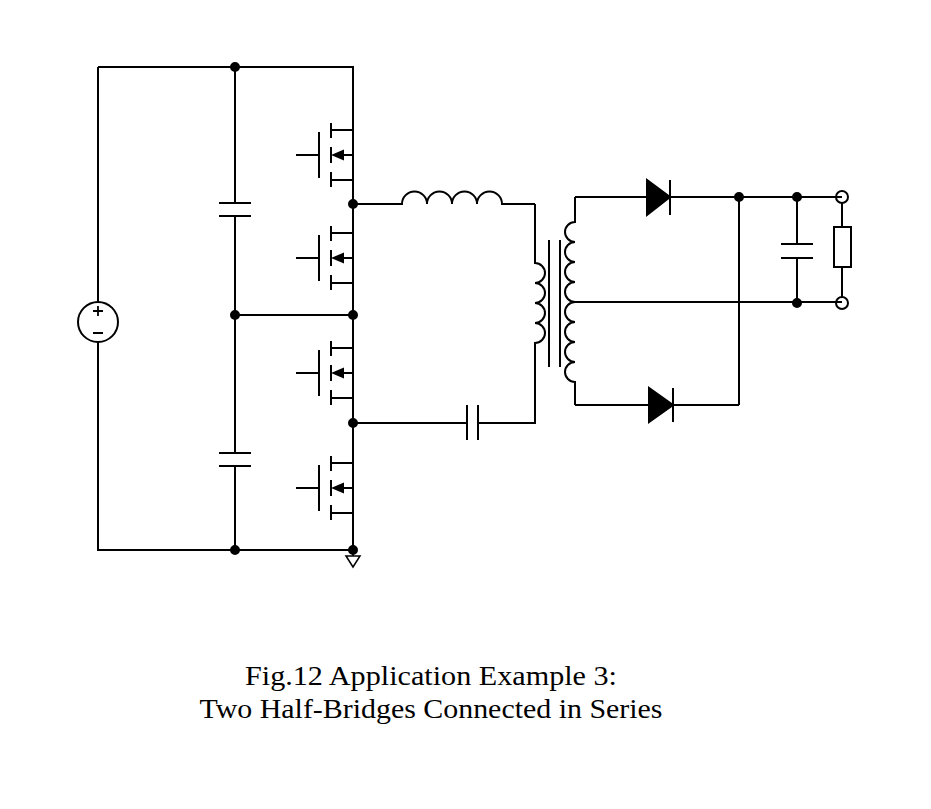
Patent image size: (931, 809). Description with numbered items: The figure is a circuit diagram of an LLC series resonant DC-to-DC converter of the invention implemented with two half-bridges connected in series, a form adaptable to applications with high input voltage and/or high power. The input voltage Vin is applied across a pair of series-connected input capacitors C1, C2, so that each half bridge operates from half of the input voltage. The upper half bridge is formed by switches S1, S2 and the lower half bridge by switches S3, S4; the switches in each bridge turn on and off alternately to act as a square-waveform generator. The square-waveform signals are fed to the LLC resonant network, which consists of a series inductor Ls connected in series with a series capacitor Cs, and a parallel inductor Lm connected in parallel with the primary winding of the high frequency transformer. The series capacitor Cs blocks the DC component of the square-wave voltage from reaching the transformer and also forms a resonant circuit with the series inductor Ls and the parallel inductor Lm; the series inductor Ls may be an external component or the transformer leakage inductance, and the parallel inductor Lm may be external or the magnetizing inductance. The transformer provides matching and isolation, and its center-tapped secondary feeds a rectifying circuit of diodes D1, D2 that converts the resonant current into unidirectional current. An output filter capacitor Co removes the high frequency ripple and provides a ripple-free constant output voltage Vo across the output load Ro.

The input voltage Vin is at (184, 334).
The input capacitor C1 is at (221, 189).
The input capacitor C2 is at (222, 442).
The switch S1 is at (309, 137).
The switch S2 is at (309, 258).
The switch S3 is at (308, 373).
The switch S4 is at (308, 500).
The series inductor Ls is at (444, 229).
The parallel inductor Lm is at (519, 313).
The series capacitor Cs is at (415, 409).
The diode D1 is at (684, 210).
The diode D2 is at (685, 426).
The output capacitor Co is at (797, 275).
The output load Ro is at (857, 278).
The output voltage Vo is at (824, 222).